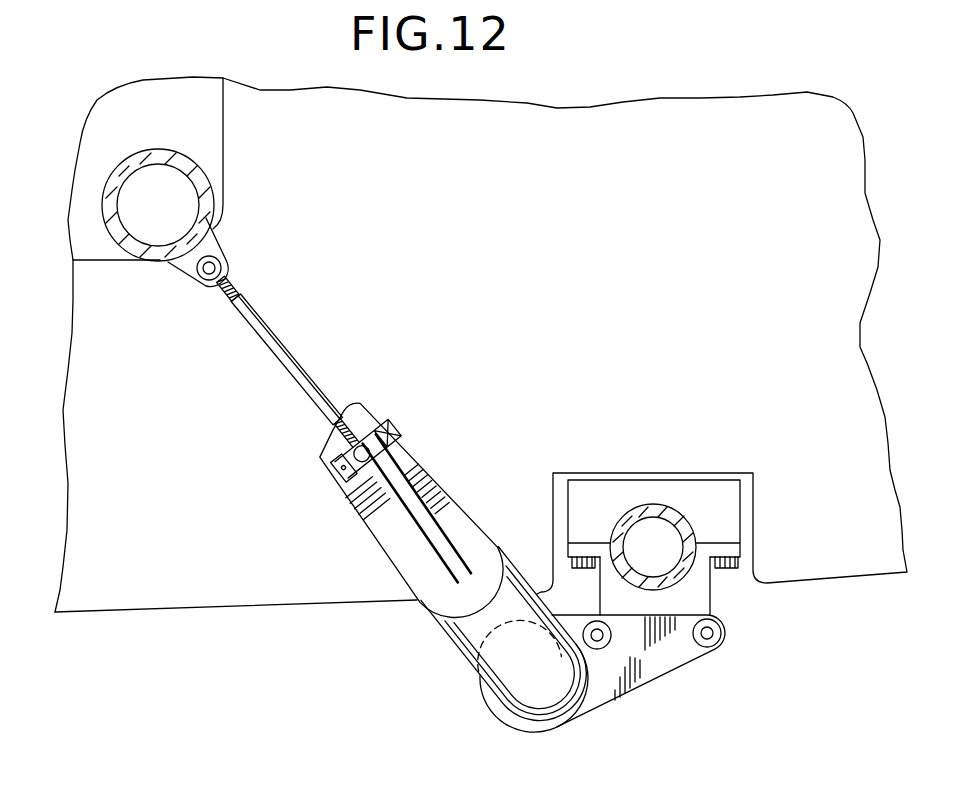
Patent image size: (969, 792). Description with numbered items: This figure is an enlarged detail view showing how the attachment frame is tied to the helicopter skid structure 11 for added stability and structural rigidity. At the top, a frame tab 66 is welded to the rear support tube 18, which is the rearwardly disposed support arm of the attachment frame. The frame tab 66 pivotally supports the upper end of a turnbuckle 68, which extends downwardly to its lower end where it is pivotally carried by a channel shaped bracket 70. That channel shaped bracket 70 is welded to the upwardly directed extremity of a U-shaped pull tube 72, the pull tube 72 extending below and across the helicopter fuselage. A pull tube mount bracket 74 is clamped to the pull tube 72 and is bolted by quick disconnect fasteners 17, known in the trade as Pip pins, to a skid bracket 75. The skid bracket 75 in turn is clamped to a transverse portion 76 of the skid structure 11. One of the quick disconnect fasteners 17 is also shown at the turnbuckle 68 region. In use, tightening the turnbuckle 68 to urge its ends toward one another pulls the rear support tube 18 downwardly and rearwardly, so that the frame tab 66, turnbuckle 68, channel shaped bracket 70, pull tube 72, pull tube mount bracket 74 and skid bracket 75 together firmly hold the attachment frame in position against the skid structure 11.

The skid structure 11 is at (668, 499).
The quick disconnect fastener 17 is at (383, 425).
The rear support tube 18 is at (185, 157).
The frame tabs 66 is at (218, 242).
The turnbuckles 68 is at (288, 350).
The channel shaped brackets 70 is at (397, 478).
The pull tube 72 is at (462, 635).
The pull tube mount brackets 74 is at (602, 700).
The skid bracket 75 is at (700, 600).
The transverse portion 76 is at (690, 517).